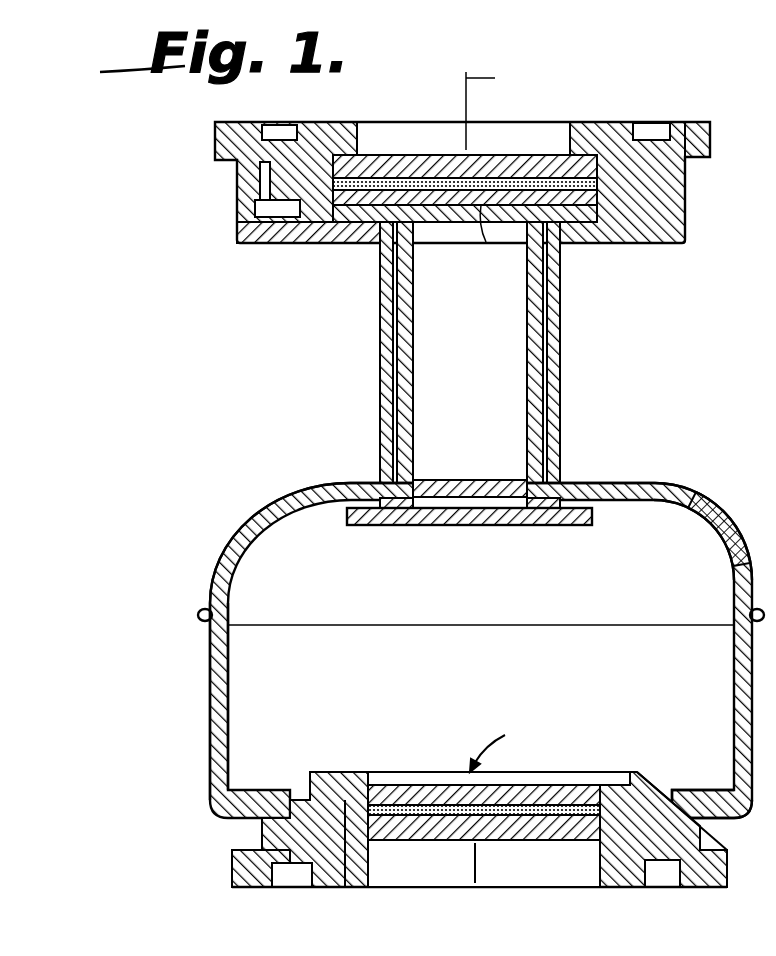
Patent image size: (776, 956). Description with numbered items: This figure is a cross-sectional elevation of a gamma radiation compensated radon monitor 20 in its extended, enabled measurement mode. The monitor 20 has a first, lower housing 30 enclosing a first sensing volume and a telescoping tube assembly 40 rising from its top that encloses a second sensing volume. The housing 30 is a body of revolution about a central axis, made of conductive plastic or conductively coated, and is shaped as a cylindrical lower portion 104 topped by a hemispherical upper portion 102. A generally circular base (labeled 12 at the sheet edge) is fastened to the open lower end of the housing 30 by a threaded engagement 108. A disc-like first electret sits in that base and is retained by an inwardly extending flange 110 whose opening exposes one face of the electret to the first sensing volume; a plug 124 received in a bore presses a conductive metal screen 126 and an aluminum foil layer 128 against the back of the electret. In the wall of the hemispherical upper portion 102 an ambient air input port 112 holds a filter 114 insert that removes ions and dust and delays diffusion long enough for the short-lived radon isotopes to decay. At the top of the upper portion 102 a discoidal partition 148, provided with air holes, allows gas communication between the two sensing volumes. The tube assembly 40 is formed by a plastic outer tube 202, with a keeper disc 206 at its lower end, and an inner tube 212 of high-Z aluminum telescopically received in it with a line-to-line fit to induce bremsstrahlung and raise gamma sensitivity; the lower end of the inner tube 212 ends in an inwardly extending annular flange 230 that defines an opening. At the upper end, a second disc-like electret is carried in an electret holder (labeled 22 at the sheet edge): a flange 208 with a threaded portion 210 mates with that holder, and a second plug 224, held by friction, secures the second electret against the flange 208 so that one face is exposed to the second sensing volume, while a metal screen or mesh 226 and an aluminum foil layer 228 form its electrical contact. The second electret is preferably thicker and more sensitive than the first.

The base member 12 is at (502, 807).
The gamma radiation compensated radon monitor 20 is at (462, 195).
The cover flange 22 is at (716, 130).
The lower housing 30 is at (446, 632).
The telescoping tube assembly 40 is at (465, 365).
The hemispherical upper portion 102 is at (289, 485).
The cylindrical lower portion 104 is at (220, 757).
The threaded engagement 108 is at (681, 786).
The inwardly extending flange 110 is at (377, 772).
The ambient air input port 112 is at (700, 556).
The filter insert 114 is at (706, 498).
The plug 124 is at (372, 872).
The conductive metal screen 126 is at (484, 843).
The aluminum foil layer 128 is at (533, 842).
The discoidal partition 148 is at (500, 478).
The outer tube 202 is at (560, 427).
The keeper disc 206 is at (408, 528).
The flange 208 is at (278, 246).
The threaded portion 210 is at (243, 237).
The inner tube 212 is at (543, 350).
The second plug 224 is at (585, 128).
The metal screen or mesh 226 is at (405, 152).
The aluminum foil layer 228 is at (517, 160).
The inwardly extending annular flange 230 is at (530, 528).